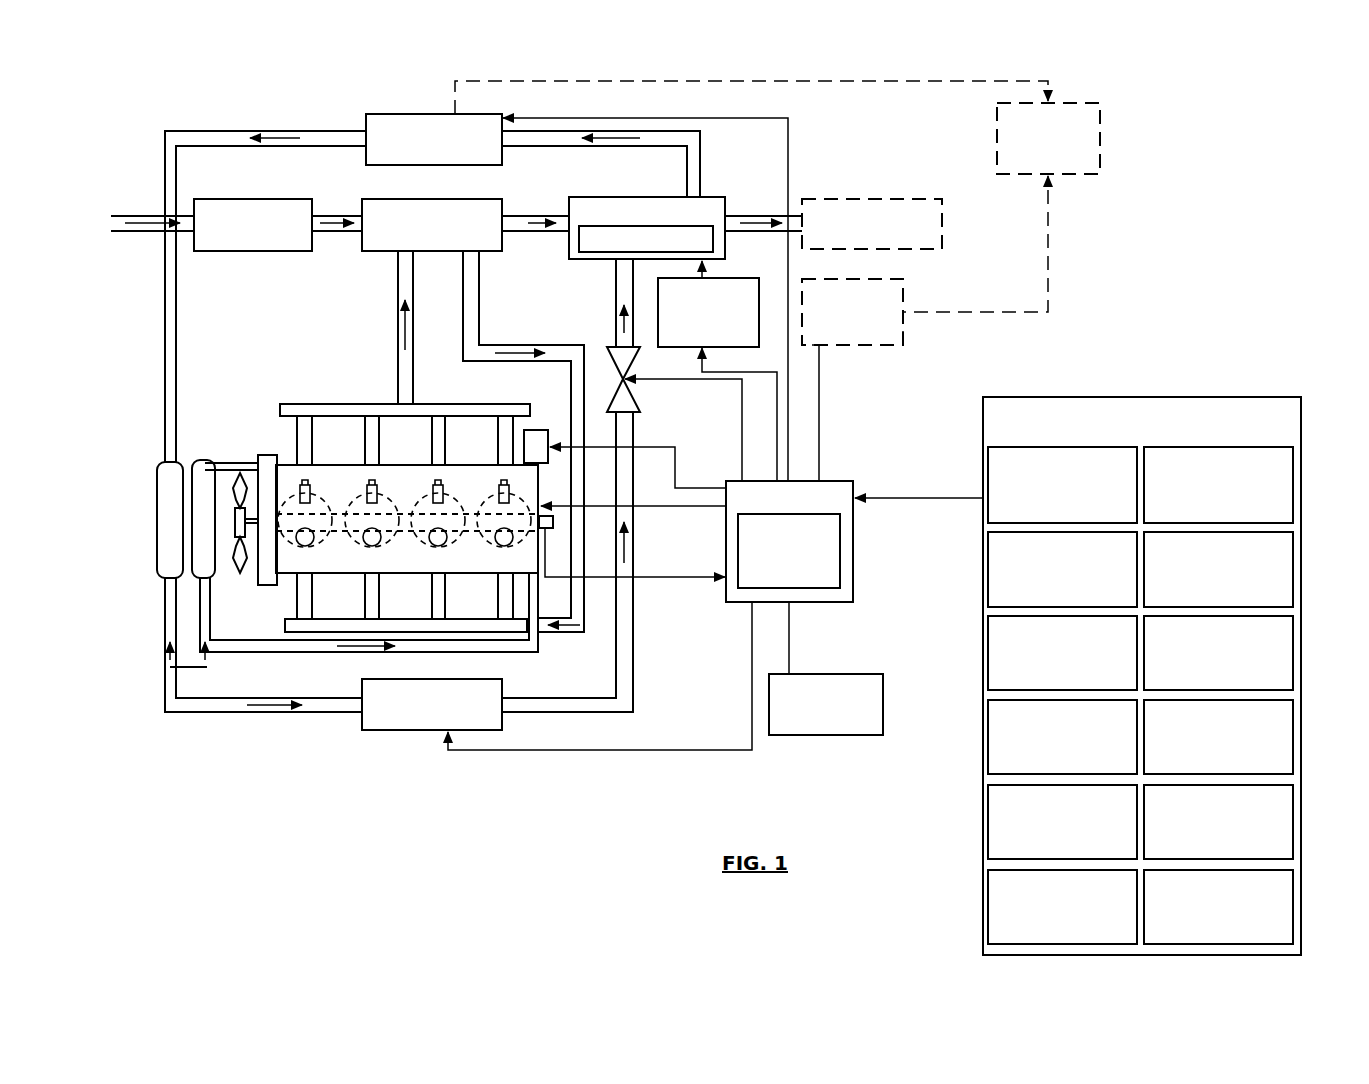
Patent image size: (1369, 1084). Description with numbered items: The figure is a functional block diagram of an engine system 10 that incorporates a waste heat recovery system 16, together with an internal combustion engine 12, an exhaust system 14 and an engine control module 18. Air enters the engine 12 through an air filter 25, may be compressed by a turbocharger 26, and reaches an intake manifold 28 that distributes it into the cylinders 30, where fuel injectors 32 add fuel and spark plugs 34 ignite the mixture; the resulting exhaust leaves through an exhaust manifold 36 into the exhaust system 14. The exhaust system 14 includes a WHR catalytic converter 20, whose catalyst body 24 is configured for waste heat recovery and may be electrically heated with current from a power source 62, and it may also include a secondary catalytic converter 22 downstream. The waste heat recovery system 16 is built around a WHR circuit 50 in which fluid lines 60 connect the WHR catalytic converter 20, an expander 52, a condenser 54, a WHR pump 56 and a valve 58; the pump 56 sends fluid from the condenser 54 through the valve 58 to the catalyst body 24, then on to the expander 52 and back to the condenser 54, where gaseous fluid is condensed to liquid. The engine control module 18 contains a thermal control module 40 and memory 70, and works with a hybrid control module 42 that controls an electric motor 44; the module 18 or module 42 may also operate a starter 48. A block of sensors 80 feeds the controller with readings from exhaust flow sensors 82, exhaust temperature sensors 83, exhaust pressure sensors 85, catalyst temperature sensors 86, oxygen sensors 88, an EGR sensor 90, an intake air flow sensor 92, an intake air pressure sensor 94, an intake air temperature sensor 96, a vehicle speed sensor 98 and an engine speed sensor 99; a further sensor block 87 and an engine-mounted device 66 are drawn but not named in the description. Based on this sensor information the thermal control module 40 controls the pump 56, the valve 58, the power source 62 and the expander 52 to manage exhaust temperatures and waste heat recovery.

The engine system 10 is at (1210, 155).
The internal combustion engine 12 is at (283, 464).
The exhaust system 14 is at (814, 161).
The waste heat recovery system 16 is at (428, 788).
The engine control module 18 is at (847, 480).
The WHR catalytic converter 20 is at (650, 196).
The secondary catalytic converter 22 is at (915, 196).
The catalyst body 24 is at (710, 225).
The air filter 25 is at (253, 198).
The turbocharger 26 is at (370, 252).
The intake manifold 28 is at (284, 627).
The cylinders 30 is at (326, 502).
The fuel injectors 32 is at (305, 546).
The spark plugs 34 is at (504, 483).
The exhaust manifold 36 is at (302, 403).
The thermal control module 40 is at (820, 590).
The hybrid control module 42 is at (904, 297).
The electric motor 44 is at (1100, 117).
The starter 48 is at (538, 429).
The WHR circuit 50 is at (216, 92).
The expander 52 is at (425, 113).
The condenser 54 is at (167, 461).
The WHR pump 56 is at (378, 731).
The valve 58 is at (640, 402).
The fluid lines 60 is at (178, 308).
The power source 62 is at (737, 278).
The engine sensor 66 is at (556, 522).
The memory 70 is at (825, 736).
The sensors 80 is at (1240, 397).
The exhaust flow sensors 82 is at (987, 455).
The exhaust temperature sensors 83 is at (1294, 480).
The exhaust pressure sensors 85 is at (987, 583).
The catalyst temperature sensors 86 is at (987, 650).
The load module 87 is at (987, 735).
The oxygen sensors 88 is at (1294, 570).
The EGR sensor 90 is at (1294, 656).
The intake air flow sensor 92 is at (1294, 732).
The intake air pressure sensor 94 is at (987, 805).
The intake air temperature sensor 96 is at (1294, 810).
The vehicle speed sensor 98 is at (987, 888).
The engine speed sensor 99 is at (1294, 893).